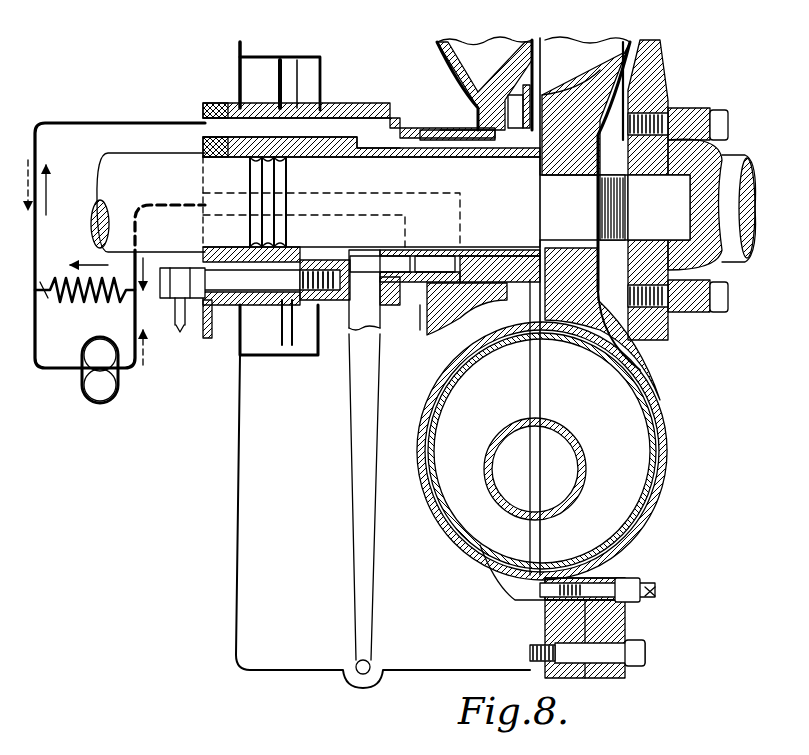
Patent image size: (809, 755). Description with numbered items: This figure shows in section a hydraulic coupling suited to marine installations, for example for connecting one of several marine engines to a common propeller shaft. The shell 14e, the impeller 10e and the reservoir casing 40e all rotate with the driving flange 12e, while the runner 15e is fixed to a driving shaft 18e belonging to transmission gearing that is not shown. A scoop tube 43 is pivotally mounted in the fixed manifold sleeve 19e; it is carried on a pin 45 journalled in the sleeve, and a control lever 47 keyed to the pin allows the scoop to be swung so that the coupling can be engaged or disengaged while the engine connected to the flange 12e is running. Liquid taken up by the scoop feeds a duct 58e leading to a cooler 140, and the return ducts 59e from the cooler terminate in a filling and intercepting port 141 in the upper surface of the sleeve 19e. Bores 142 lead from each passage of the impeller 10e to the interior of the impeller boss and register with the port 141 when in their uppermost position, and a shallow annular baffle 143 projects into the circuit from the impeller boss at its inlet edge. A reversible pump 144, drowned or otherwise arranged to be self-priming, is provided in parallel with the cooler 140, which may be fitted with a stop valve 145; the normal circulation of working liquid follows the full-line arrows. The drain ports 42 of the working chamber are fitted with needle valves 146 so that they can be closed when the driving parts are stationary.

The impeller 10e is at (437, 518).
The driving flange 12e is at (688, 102).
The shell 14e is at (656, 506).
The runner 15e is at (648, 438).
The driving shaft 18e is at (446, 202).
The fixed manifold sleeve 19e is at (468, 292).
The reservoir casing 40e is at (320, 673).
The drain ports 42 is at (535, 604).
The scoop tube 43 is at (348, 382).
The pin 45 is at (270, 282).
The control lever 47 is at (200, 336).
The duct 58e is at (363, 193).
The return ducts 59e is at (370, 147).
The cooler 140 is at (42, 292).
The filling and intercepting port 141 is at (478, 106).
The bores 142 is at (513, 98).
The shallow annular baffle 143 is at (526, 86).
The reversible pump 144 is at (118, 392).
The stop valve 145 is at (44, 290).
The needle valves 146 is at (646, 586).